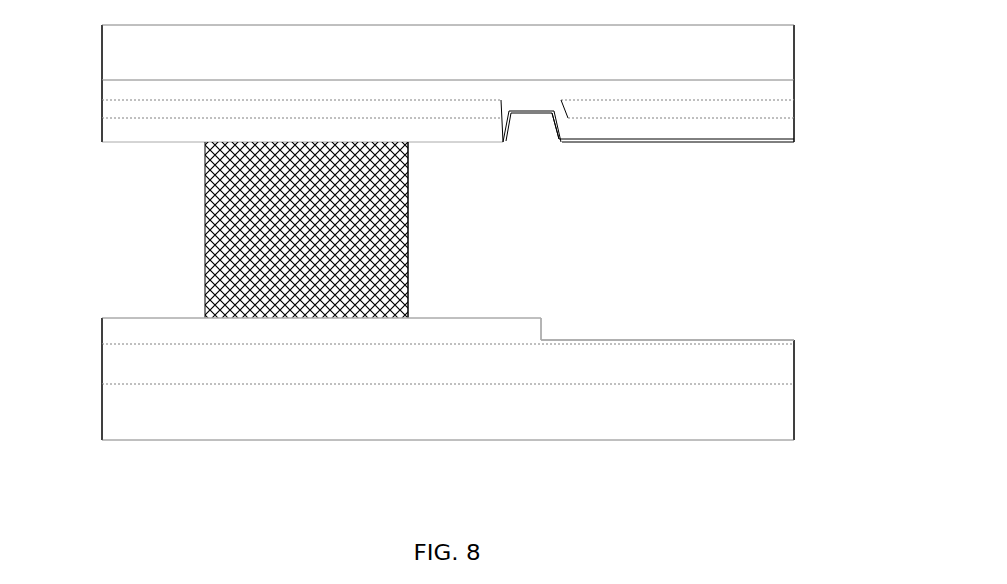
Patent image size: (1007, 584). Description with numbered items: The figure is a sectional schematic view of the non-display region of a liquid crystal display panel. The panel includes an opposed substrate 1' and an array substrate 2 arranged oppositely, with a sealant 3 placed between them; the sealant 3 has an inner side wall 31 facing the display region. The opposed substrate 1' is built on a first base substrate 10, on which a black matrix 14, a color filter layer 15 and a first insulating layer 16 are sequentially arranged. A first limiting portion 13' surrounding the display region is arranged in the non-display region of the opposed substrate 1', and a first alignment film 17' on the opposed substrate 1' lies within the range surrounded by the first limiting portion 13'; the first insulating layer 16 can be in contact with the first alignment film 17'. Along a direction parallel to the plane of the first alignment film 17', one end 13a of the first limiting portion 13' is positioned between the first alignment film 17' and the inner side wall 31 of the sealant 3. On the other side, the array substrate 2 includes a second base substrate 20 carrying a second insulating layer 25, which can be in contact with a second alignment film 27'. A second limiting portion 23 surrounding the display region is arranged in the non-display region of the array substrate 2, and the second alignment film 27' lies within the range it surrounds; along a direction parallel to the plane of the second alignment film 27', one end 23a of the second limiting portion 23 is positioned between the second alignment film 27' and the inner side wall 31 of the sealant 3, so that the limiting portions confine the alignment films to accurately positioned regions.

The opposed substrate 1' is at (416, 83).
The first base substrate 10 is at (795, 45).
The black matrix 14 is at (795, 90).
The color filter layer 15 is at (795, 108).
The first insulating layer 16 is at (795, 130).
The end of the first limiting portion 13a is at (503, 142).
The first limiting portion 13' is at (556, 156).
The first alignment film 17' is at (707, 151).
The sealant 3 is at (398, 230).
The inner side wall 31 is at (408, 280).
The array substrate 2 is at (95, 318).
The second base substrate 20 is at (795, 423).
The second limiting portion 23 is at (436, 335).
The end of the second limiting portion 23a is at (542, 318).
The second insulating layer 25 is at (795, 355).
The second alignment film 27' is at (702, 312).